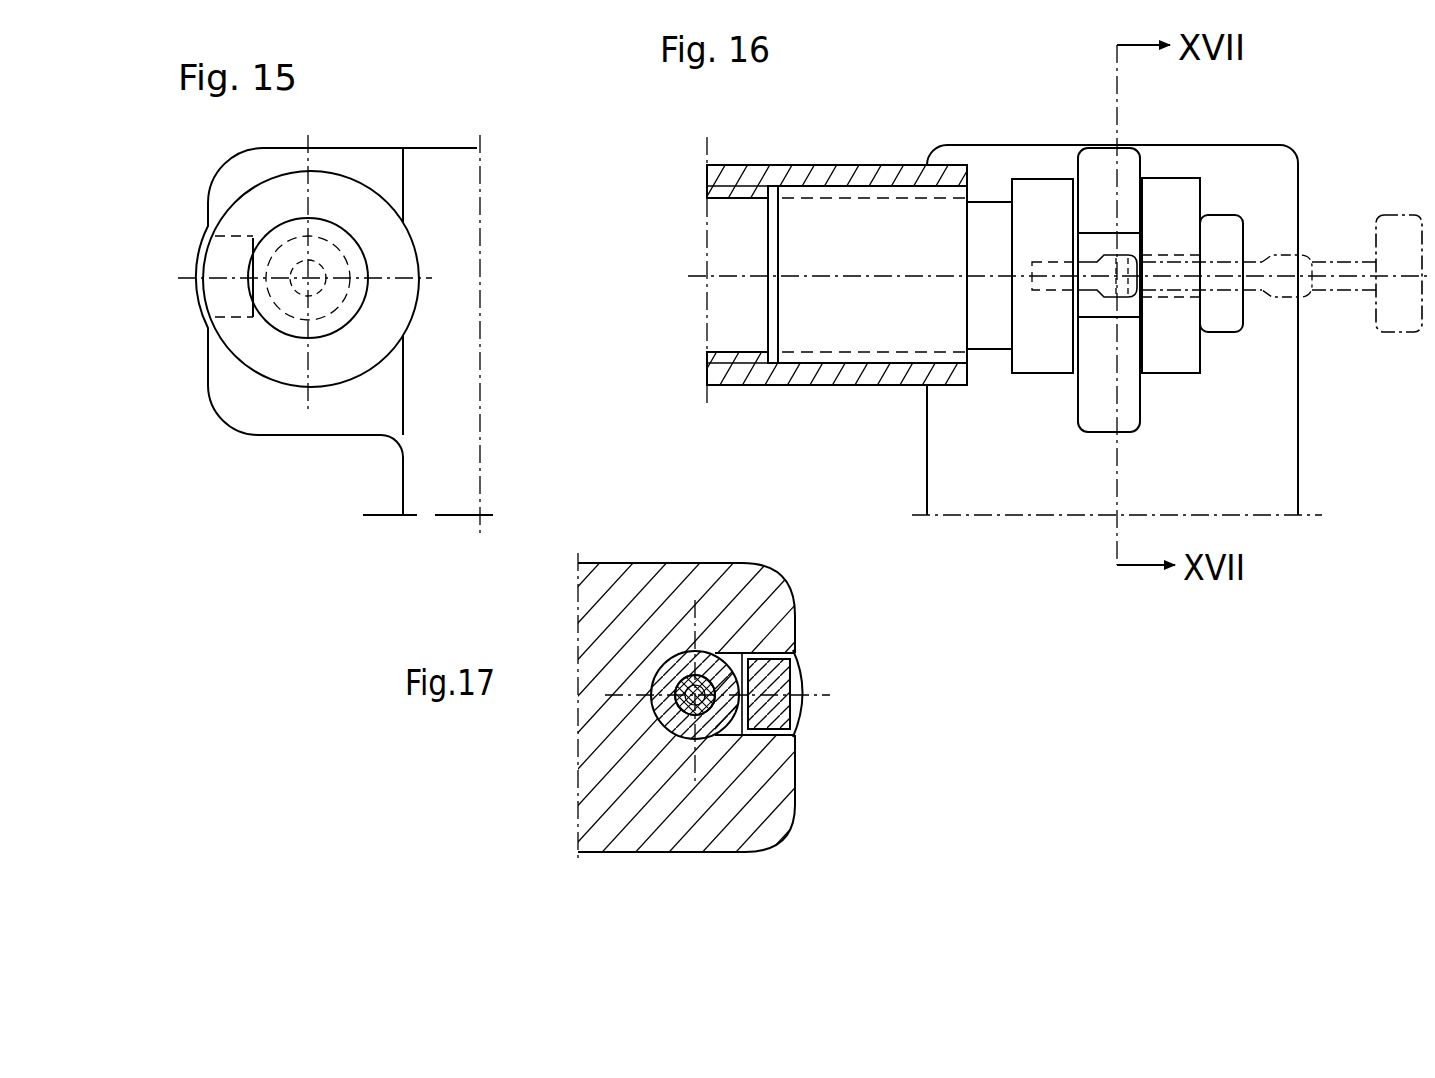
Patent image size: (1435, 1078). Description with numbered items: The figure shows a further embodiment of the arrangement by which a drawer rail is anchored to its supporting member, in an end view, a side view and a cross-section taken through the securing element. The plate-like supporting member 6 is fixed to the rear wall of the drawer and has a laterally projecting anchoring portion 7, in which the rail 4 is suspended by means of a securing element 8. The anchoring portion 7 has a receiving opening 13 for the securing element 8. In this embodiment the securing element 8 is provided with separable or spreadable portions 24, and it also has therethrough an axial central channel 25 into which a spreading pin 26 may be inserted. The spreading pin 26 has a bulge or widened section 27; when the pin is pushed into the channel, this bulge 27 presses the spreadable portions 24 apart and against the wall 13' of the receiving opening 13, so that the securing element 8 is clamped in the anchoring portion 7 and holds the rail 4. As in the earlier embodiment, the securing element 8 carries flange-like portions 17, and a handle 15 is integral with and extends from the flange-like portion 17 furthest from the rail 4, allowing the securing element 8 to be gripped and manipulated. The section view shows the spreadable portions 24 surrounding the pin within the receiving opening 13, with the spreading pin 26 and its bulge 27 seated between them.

In FIG. 16, the rail 4 is at (749, 166).
In FIG. 15, the supporting member 6 is at (443, 493).
In FIG. 15, the anchoring portion 7 is at (343, 145).
In FIG. 17, the anchoring portion 7 is at (802, 825).
In FIG. 15, the securing element 8 is at (194, 266).
In FIG. 16, the securing element 8 is at (1016, 177).
In FIG. 17, the receiving opening 13 is at (597, 661).
In FIG. 17, the wall of the receiving opening 13' is at (655, 606).
In FIG. 16, the handle 15 is at (835, 197).
In FIG. 16, the flange-like portion 17 is at (1038, 362).
In FIG. 17, the spreadable portions 24 is at (726, 650).
In FIG. 16, the axial central channel 25 is at (1023, 262).
In FIG. 16, the spreading pin 26 is at (1228, 240).
In FIG. 17, the spreading pin 26 is at (738, 683).
In FIG. 16, the bulge 27 is at (1120, 260).
In FIG. 17, the bulge 27 is at (769, 694).